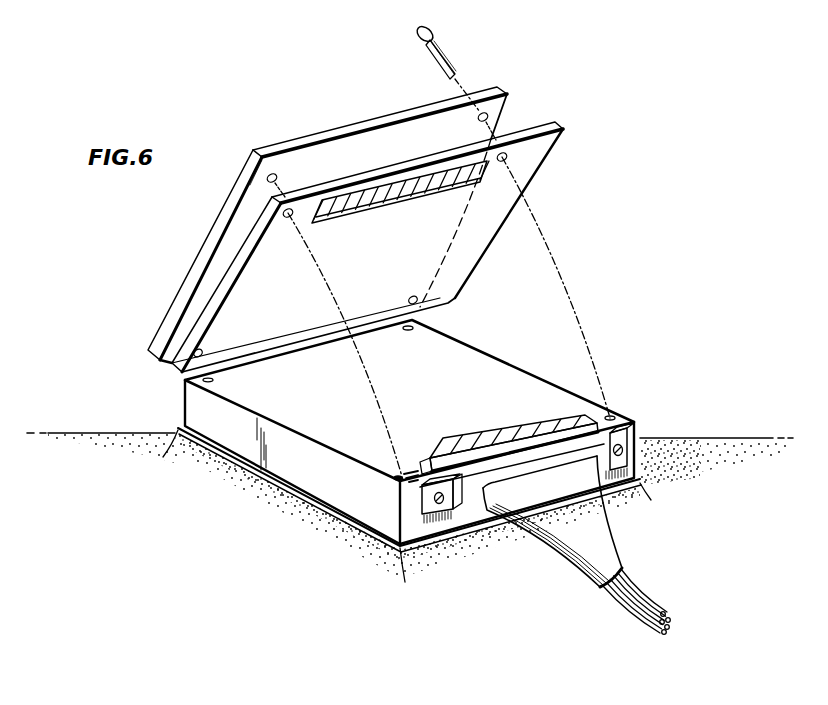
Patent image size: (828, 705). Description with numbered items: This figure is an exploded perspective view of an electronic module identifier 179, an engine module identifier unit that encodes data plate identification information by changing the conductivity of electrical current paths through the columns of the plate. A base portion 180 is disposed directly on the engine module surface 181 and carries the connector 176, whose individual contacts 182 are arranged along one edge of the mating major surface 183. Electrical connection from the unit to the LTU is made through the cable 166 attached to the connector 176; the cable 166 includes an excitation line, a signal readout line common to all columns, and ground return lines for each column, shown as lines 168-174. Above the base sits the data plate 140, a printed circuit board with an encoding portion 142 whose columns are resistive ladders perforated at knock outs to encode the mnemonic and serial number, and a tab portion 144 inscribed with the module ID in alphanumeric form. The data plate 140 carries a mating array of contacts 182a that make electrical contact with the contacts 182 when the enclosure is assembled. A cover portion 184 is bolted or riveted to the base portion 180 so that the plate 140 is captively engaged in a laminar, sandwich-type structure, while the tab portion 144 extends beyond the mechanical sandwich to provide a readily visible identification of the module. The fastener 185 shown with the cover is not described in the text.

The data plate 140 is at (238, 249).
The encoding portion 142 is at (226, 302).
The tab portion 144 is at (481, 250).
The cable 166 is at (600, 547).
The excitation, signal readout and ground return lines 168-174 is at (637, 597).
The connector 176 is at (473, 507).
The electronic module identifier 179 is at (608, 140).
The base portion 180 is at (300, 475).
The engine module surface 181 is at (137, 452).
The contacts 182 is at (569, 412).
The mating array of contacts 182a is at (484, 175).
The mating major surface 183 is at (460, 353).
The cover portion 184 is at (500, 92).
The screw 185 is at (443, 53).